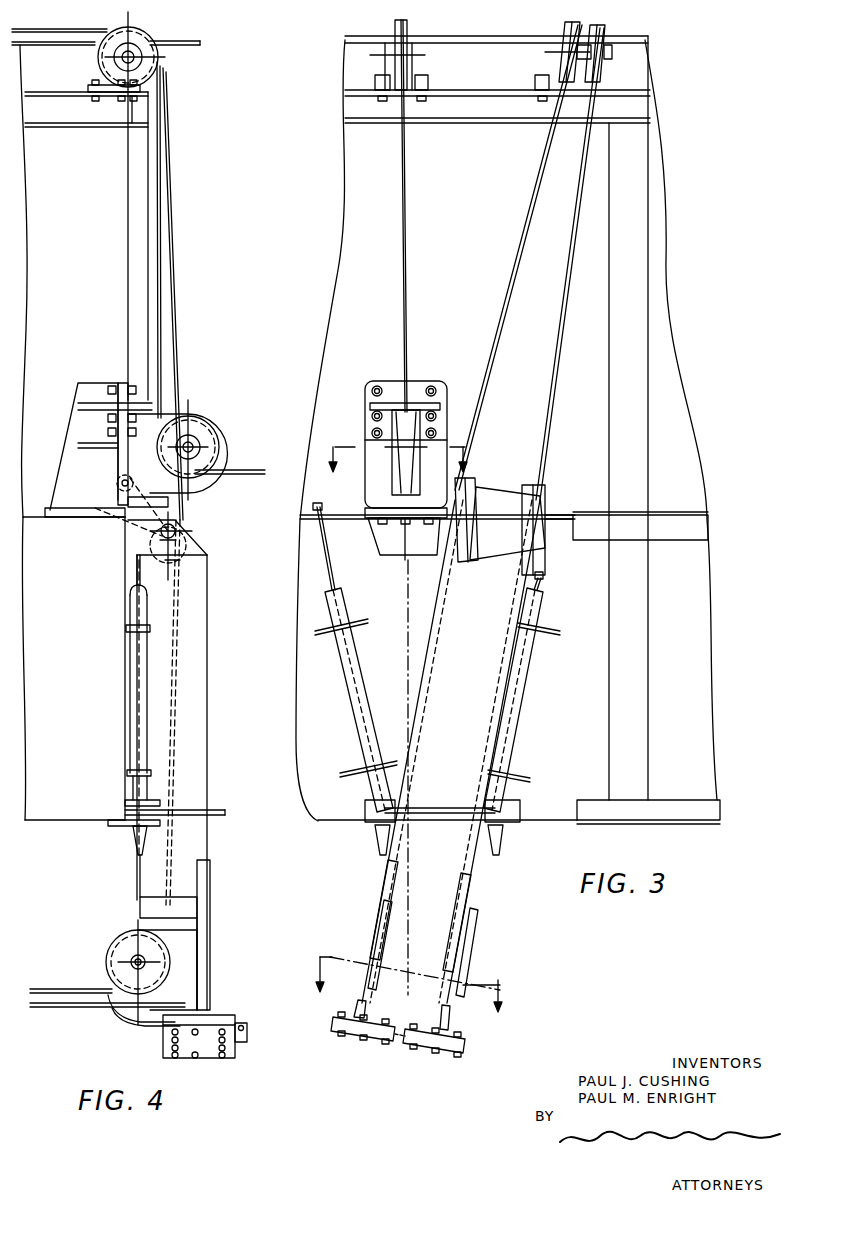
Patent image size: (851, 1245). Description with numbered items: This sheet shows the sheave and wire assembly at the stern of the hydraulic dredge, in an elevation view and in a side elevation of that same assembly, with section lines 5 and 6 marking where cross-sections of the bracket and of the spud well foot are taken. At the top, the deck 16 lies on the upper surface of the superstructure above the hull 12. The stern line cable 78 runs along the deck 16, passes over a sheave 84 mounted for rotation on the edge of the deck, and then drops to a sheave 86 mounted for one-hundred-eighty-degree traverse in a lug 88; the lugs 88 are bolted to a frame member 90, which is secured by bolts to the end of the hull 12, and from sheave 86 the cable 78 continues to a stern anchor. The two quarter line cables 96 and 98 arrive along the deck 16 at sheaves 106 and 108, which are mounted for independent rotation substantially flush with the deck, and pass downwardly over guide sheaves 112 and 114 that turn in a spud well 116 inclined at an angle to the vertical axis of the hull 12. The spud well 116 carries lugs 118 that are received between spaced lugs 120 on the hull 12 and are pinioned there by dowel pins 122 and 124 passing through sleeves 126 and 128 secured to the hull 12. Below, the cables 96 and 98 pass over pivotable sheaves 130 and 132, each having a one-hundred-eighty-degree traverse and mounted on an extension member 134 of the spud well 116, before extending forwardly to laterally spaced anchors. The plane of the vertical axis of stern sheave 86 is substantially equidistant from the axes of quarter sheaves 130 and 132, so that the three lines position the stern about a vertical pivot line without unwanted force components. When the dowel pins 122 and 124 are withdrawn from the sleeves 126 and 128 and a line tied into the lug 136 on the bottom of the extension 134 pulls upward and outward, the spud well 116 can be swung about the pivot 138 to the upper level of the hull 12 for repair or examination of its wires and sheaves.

In FIG. 3, the section line 5- 5 is at (392, 448).
In FIG. 3, the section line 6- 6 is at (412, 974).
In FIG. 4, the hull 12 is at (28, 512).
In FIG. 4, the deck 16 is at (72, 47).
In FIG. 3, the deck 16 is at (474, 38).
In FIG. 4, the cable 78 is at (60, 30).
In FIG. 3, the cable 78 is at (408, 238).
In FIG. 4, the sheave 84 is at (152, 36).
In FIG. 3, the sheave 84 is at (394, 30).
In FIG. 4, the sheave 86 is at (210, 425).
In FIG. 3, the sheave 86 is at (394, 458).
In FIG. 4, the lug 88 is at (154, 405).
In FIG. 3, the lug 88 is at (447, 398).
In FIG. 4, the frame member 90 is at (74, 405).
In FIG. 4, the cable 96 is at (176, 308).
In FIG. 3, the cable 96 is at (514, 280).
In FIG. 4, the cable 98 is at (65, 1008).
In FIG. 3, the cable 98 is at (566, 302).
In FIG. 3, the sheave 106 is at (566, 24).
In FIG. 3, the sheave 108 is at (604, 28).
In FIG. 4, the guide sheave 112 is at (178, 528).
In FIG. 3, the guide sheave 112 is at (478, 528).
In FIG. 4, the guide sheave 114 is at (166, 560).
In FIG. 3, the guide sheave 114 is at (522, 540).
In FIG. 4, the spud well 116 is at (208, 668).
In FIG. 3, the spud well 116 is at (518, 583).
In FIG. 4, the lug 118 is at (122, 826).
In FIG. 3, the lug 118 is at (364, 810).
In FIG. 4, the lug 120 is at (162, 802).
In FIG. 3, the lug 120 is at (356, 796).
In FIG. 3, the dowel pin 122 is at (540, 620).
In FIG. 4, the dowel pin 124 is at (130, 620).
In FIG. 3, the dowel pin 124 is at (326, 608).
In FIG. 3, the sleeve 126 is at (528, 670).
In FIG. 4, the sleeve 128 is at (130, 708).
In FIG. 3, the sleeve 128 is at (356, 668).
In FIG. 4, the pivotable sheave 130 is at (118, 1020).
In FIG. 3, the pivotable sheave 130 is at (354, 1007).
In FIG. 4, the pivotable sheave 132 is at (148, 1028).
In FIG. 3, the pivotable sheave 132 is at (452, 1030).
In FIG. 4, the extension member 134 is at (211, 980).
In FIG. 4, the lug 136 is at (248, 1036).
In FIG. 3, the lug 136 is at (398, 1042).
In FIG. 4, the pivot 138 is at (118, 480).